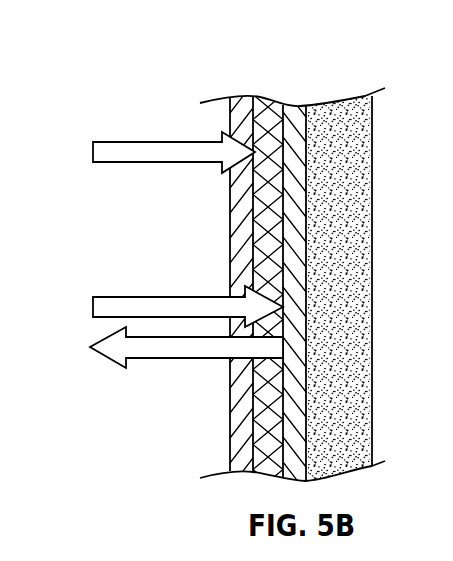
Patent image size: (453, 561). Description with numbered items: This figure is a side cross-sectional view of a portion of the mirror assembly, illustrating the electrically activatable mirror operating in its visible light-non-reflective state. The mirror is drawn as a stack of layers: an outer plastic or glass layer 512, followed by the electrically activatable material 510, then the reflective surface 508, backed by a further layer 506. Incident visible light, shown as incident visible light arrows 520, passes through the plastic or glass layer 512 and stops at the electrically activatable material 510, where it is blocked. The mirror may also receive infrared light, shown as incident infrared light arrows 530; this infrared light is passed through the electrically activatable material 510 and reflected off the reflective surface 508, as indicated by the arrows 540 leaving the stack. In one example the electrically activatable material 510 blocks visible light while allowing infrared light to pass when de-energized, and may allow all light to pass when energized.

The substrate 506 is at (336, 107).
The reflective surface 508 is at (297, 112).
The electrically activatable material 510 is at (265, 105).
The plastic or glass layer 512 is at (244, 104).
The incident visible light arrows 520 is at (93, 144).
The incident infrared light arrows 530 is at (93, 298).
The arrows 540 is at (108, 362).